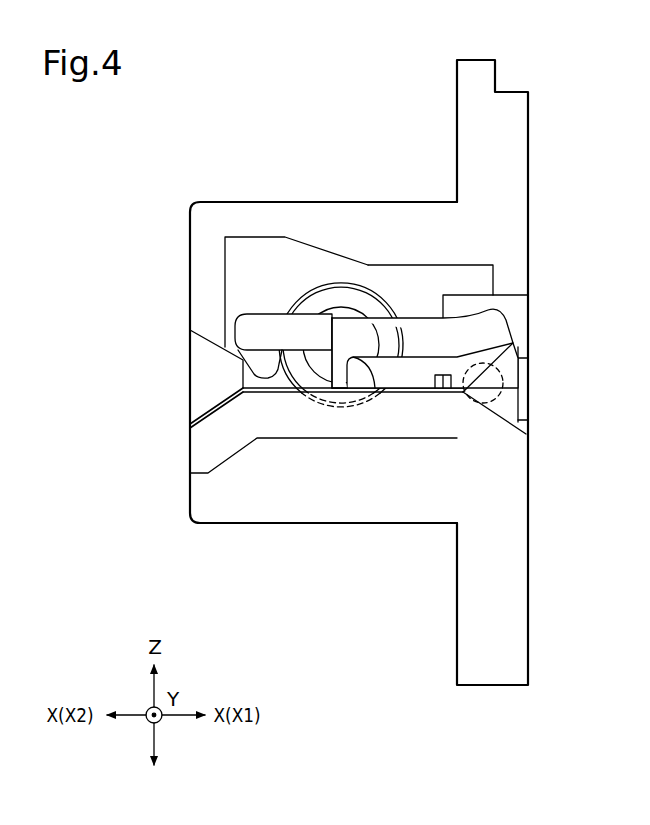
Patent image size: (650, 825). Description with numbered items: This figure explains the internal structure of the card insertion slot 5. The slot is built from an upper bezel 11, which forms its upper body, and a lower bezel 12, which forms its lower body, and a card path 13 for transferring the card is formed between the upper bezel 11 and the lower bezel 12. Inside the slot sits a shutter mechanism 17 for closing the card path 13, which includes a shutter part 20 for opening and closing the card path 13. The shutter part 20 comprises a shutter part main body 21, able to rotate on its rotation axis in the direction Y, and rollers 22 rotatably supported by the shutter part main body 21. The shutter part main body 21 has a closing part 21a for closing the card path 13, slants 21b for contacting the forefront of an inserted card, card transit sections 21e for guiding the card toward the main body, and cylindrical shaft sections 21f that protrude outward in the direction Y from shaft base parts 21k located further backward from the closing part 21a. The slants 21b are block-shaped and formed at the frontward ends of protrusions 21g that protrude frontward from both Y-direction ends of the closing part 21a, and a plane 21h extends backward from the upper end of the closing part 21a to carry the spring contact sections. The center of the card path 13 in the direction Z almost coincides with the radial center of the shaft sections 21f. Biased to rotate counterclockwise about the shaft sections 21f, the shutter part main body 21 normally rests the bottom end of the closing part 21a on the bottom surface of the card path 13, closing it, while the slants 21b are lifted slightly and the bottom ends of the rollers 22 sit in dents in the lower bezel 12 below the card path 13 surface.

The card insertion slot 5 is at (304, 114).
The upper bezel 11 is at (530, 147).
The lower bezel 12 is at (529, 580).
The card path 13 is at (212, 372).
The shutter mechanism 17 is at (256, 272).
The shutter part 20 is at (423, 344).
The shutter part main body 21 is at (511, 328).
The closing part 21a is at (323, 396).
The slants 21b is at (259, 384).
The card transit sections 21e is at (420, 394).
The shaft sections 21f is at (504, 387).
The protrusions 21g is at (313, 318).
The plane 21h is at (430, 318).
The shaft base parts 21k is at (529, 410).
The rollers 22 is at (339, 283).